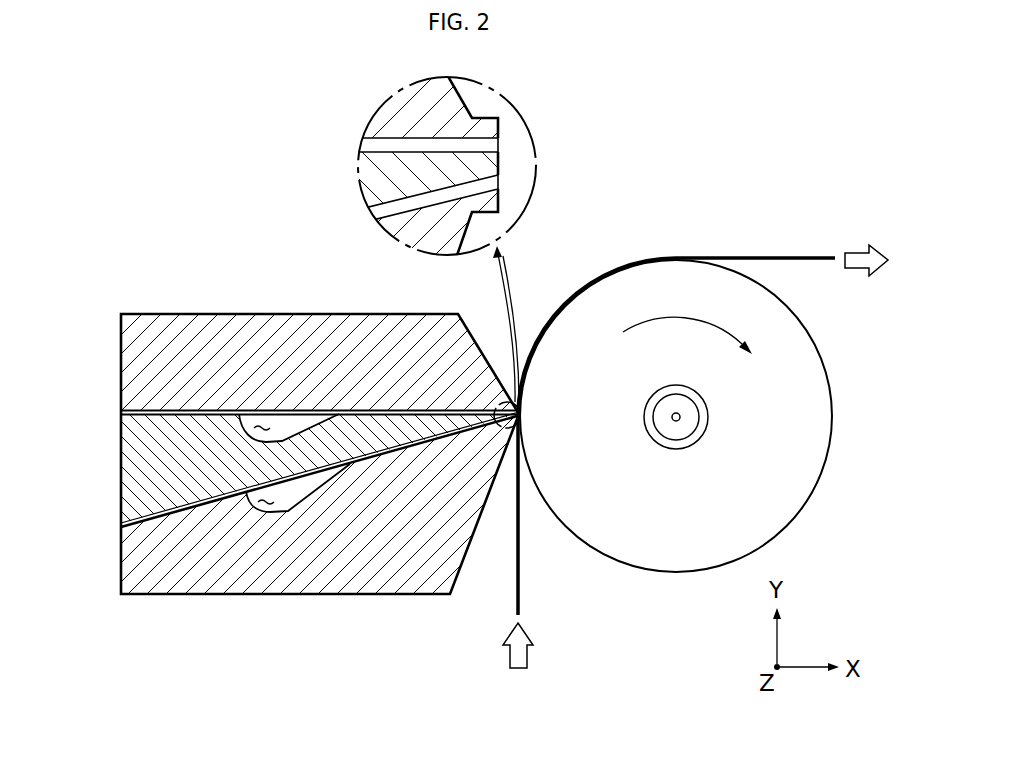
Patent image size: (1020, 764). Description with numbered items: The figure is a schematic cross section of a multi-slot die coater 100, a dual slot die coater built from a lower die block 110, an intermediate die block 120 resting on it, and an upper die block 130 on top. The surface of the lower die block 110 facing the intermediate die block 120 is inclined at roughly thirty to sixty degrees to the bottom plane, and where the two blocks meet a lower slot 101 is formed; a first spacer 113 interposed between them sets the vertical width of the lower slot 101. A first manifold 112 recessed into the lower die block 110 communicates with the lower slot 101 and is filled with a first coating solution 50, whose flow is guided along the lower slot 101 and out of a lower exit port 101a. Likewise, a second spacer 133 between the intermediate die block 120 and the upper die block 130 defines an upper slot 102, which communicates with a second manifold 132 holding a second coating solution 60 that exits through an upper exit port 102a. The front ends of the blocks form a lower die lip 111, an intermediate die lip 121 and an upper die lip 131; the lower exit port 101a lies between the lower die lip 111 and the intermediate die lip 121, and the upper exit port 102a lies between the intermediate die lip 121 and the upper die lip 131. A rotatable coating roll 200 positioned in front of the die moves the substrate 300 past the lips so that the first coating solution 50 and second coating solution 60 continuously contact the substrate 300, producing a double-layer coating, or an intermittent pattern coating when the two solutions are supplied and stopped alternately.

The multi-slot die coater 100 is at (117, 267).
The upper die block 130 is at (100, 366).
The intermediate die block 120 is at (100, 453).
The lower die block 110 is at (100, 556).
The second spacer 133 is at (144, 410).
The second coating solution 60 is at (263, 428).
The second manifold 132 is at (281, 440).
The upper slot 102 is at (311, 410).
The first spacer 113 is at (143, 527).
The first coating solution 50 is at (267, 505).
The first manifold 112 is at (309, 496).
The lower slot 101 is at (347, 466).
The upper die lip 131 is at (488, 128).
The upper exit port 102a is at (510, 141).
The intermediate die lip 121 is at (491, 162).
The lower exit port 101a is at (511, 179).
The lower die lip 111 is at (495, 204).
The substrate 300 is at (521, 591).
The coating roll 200 is at (676, 574).